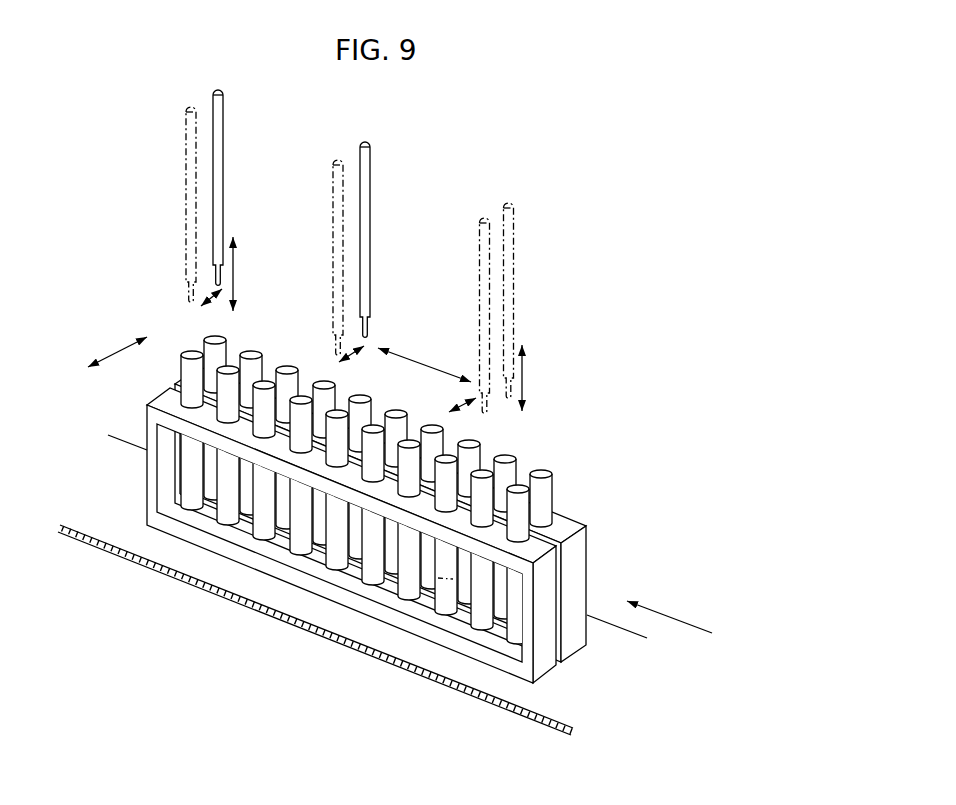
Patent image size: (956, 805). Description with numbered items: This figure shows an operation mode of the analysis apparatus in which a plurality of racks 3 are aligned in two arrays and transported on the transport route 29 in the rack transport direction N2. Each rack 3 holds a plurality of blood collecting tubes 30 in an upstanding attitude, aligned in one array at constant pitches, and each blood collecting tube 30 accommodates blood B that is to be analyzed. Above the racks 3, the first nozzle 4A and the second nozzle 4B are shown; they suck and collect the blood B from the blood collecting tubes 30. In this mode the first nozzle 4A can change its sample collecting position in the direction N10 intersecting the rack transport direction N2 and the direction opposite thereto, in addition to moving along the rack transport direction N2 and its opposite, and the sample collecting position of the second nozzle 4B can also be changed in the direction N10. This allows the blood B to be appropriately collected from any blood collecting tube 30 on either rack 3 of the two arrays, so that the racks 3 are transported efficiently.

The rack 3 is at (580, 548).
The first nozzle 4A is at (336, 222).
The second nozzle 4B is at (219, 112).
The transport route 29 is at (584, 684).
The blood collecting tube 30 is at (523, 512).
The blood B is at (448, 577).
The rack transport direction N2 is at (669, 612).
The direction intersecting the rack transport direction N10 is at (115, 348).